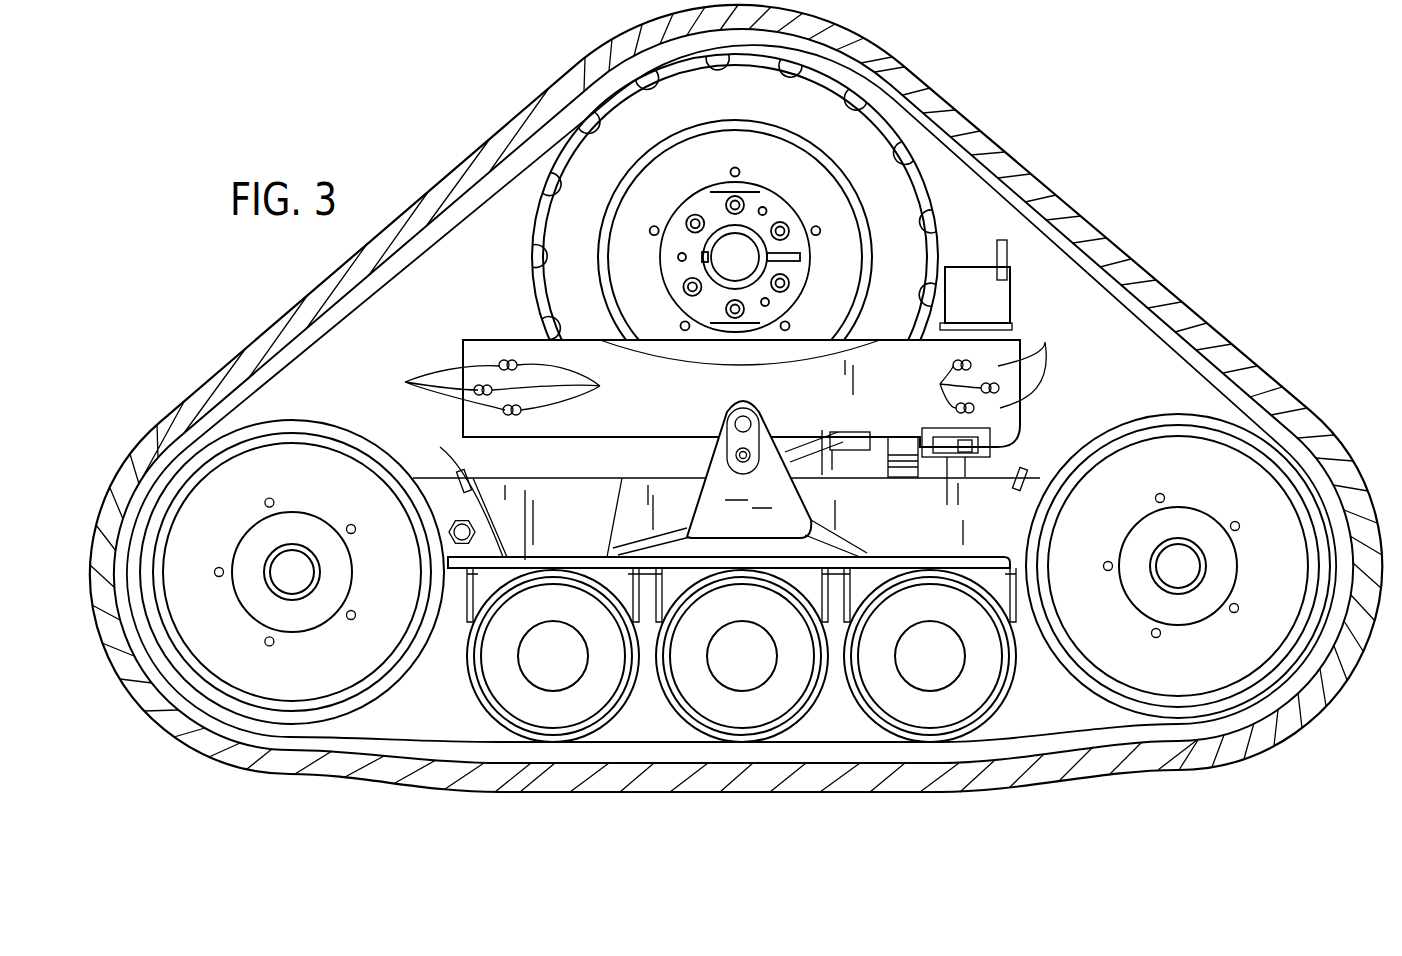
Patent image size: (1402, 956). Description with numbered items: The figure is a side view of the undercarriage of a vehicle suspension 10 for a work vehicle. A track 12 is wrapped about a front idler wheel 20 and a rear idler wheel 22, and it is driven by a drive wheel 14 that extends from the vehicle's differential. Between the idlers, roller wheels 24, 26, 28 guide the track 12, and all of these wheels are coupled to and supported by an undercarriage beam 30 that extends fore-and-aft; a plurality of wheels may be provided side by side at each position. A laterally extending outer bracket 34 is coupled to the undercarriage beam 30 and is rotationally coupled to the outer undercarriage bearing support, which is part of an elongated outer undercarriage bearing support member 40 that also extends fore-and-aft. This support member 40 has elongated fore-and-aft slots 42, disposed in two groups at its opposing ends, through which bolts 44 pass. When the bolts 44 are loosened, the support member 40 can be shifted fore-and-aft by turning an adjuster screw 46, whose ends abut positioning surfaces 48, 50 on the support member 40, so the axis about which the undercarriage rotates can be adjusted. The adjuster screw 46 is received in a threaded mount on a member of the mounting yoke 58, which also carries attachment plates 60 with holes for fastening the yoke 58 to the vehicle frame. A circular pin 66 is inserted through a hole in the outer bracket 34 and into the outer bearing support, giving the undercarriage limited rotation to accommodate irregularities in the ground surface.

The vehicle suspension 10 is at (1100, 112).
The track 12 is at (1055, 187).
The drive wheel 14 is at (925, 150).
The front idler wheel 20 is at (1181, 412).
The rear idler wheel 22 is at (293, 418).
The roller wheel 24 is at (1018, 682).
The roller wheel 26 is at (682, 712).
The roller wheel 28 is at (472, 692).
The undercarriage beam 30 is at (462, 466).
The outer bracket 34 is at (636, 500).
The outer undercarriage bearing support member 40 is at (838, 389).
The elongated fore-and-aft slots 42 is at (405, 382).
The bolts 44 is at (600, 386).
The adjuster screw 46 is at (946, 490).
The positioning surface 48 is at (1022, 486).
The positioning surface 50 is at (888, 468).
The mounting yoke 58 is at (499, 334).
The attachment plates 60 is at (966, 460).
The circular pin 66 is at (752, 424).